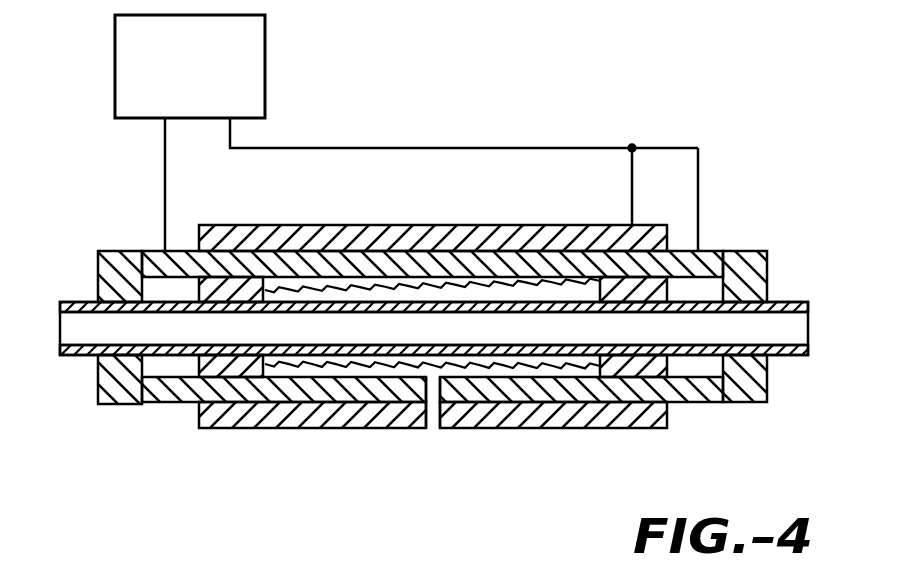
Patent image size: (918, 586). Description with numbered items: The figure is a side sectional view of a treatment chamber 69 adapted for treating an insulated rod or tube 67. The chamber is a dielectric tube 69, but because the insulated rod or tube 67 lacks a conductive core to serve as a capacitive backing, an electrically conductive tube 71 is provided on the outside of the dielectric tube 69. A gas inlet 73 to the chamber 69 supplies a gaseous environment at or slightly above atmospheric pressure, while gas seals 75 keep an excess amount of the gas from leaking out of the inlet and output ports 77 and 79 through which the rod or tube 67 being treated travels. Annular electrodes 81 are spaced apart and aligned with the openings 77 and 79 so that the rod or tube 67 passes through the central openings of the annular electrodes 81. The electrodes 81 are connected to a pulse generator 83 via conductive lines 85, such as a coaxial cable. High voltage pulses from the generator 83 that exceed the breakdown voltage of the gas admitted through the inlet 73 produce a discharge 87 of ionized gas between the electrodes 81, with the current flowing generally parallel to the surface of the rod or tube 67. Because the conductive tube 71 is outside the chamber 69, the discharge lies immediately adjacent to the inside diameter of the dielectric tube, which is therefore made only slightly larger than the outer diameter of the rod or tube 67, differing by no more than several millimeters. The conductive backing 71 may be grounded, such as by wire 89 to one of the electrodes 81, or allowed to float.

The insulated rod or tube 67 is at (82, 302).
The treatment chamber 69 is at (152, 256).
The electrically conductive tube 71 is at (470, 226).
The gas inlet 73 is at (430, 436).
The gas seals 75 is at (98, 263).
The inlet port 77 is at (148, 295).
The output port 79 is at (726, 293).
The annular electrodes 81 is at (257, 252).
The pulse generator 83 is at (265, 47).
The conductive lines 85 is at (165, 172).
The discharge 87 is at (298, 370).
The wire 89 is at (632, 180).